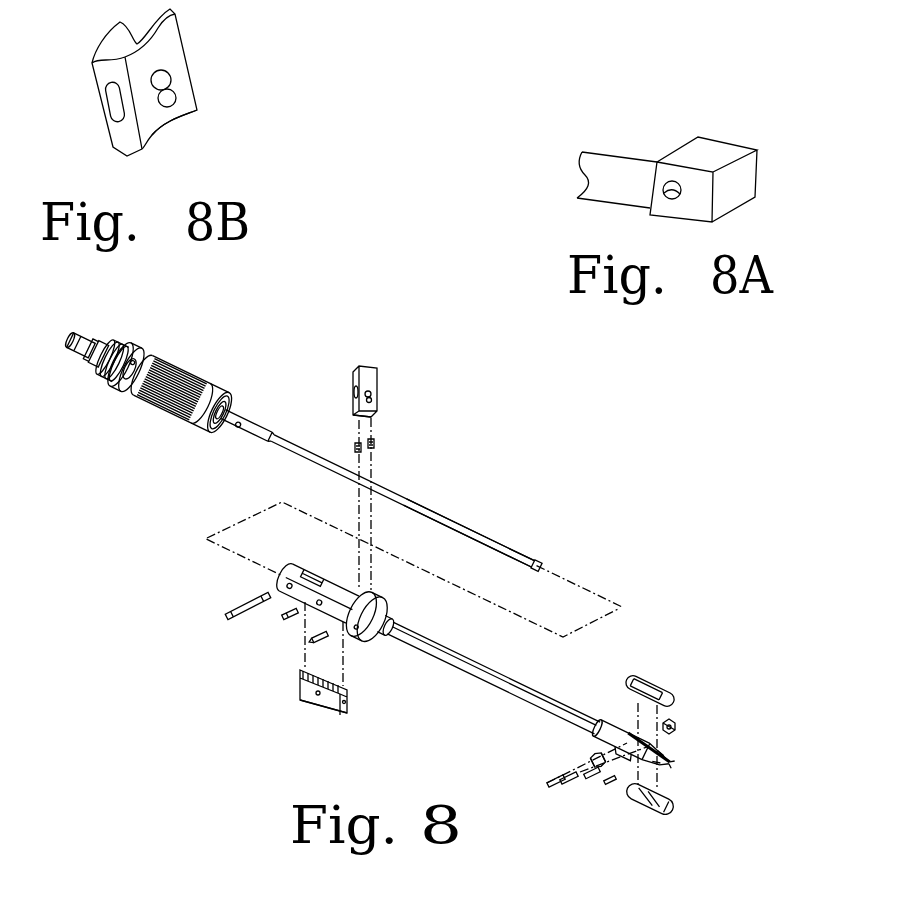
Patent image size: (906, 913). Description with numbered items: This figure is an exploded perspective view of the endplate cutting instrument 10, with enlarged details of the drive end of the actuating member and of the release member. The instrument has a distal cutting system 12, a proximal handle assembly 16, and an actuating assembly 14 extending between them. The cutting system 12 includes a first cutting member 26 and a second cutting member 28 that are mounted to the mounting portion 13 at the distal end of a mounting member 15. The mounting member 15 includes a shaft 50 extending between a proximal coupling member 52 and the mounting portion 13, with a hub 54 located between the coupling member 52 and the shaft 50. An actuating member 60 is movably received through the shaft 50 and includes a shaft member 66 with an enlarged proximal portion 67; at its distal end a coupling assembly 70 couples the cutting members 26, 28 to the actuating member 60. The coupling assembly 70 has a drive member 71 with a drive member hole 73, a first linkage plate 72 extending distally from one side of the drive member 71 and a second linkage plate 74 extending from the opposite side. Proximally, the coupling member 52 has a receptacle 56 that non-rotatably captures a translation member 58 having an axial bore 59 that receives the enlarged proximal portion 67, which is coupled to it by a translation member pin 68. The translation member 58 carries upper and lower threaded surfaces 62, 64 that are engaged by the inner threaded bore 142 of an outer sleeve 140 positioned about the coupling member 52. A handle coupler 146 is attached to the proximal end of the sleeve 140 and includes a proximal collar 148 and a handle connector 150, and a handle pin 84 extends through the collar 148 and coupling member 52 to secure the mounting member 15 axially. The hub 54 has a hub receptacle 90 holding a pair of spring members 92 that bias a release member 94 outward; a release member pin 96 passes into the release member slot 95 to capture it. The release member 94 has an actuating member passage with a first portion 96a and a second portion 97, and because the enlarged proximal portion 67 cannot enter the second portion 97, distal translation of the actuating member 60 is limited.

In FIG. 8, the endplate cutting instrument 10 is at (385, 318).
In FIG. 8, the distal cutting system 12 is at (700, 716).
In FIG. 8, the mounting portion 13 is at (675, 757).
In FIG. 8, the actuating assembly 14 is at (548, 524).
In FIG. 8, the mounting member 15 is at (531, 692).
In FIG. 8, the proximal handle assembly 16 is at (188, 358).
In FIG. 8, the first cutting member 26 is at (658, 680).
In FIG. 8, the second cutting member 28 is at (651, 812).
In FIG. 8, the shaft 50 is at (497, 678).
In FIG. 8, the coupling member 52 is at (283, 583).
In FIG. 8, the hub 54 is at (385, 640).
In FIG. 8, the receptacle 56 is at (322, 578).
In FIG. 8, the translation member 58 is at (306, 700).
In FIG. 8, the axial bore 59 is at (350, 700).
In FIG. 8, the actuating member 60 is at (467, 527).
In FIG. 8, the upper threaded surface 62 is at (298, 672).
In FIG. 8, the lower threaded surface 64 is at (325, 713).
In FIG. 8A, the shaft member 66 is at (620, 160).
In FIG. 8, the shaft member 66 is at (497, 540).
In FIG. 8, the enlarged proximal portion 67 is at (255, 426).
In FIG. 8, the translation member pin 68 is at (283, 619).
In FIG. 8, the coupling assembly 70 is at (578, 793).
In FIG. 8A, the drive member 71 is at (720, 148).
In FIG. 8, the drive member 71 is at (542, 566).
In FIG. 8, the first linkage plate 72 is at (592, 762).
In FIG. 8A, the drive member hole 73 is at (682, 200).
In FIG. 8, the second linkage plate 74 is at (680, 728).
In FIG. 8, the handle pin 84 is at (225, 618).
In FIG. 8, the hub receptacle 90 is at (392, 604).
In FIG. 8, the spring members 92 is at (376, 448).
In FIG. 8B, the release member 94 is at (98, 70).
In FIG. 8, the release member 94 is at (378, 375).
In FIG. 8B, the release member slot 95 is at (104, 100).
In FIG. 8, the release member slot 95 is at (353, 395).
In FIG. 8, the release member pin 96 is at (342, 638).
In FIG. 8B, the first portion of actuating member passage 96a is at (172, 78).
In FIG. 8, the first portion of actuating member passage 96a is at (380, 398).
In FIG. 8B, the second portion of actuating member passage 97 is at (190, 102).
In FIG. 8, the second portion of actuating member passage 97 is at (380, 411).
In FIG. 8, the outer sleeve 140 is at (208, 378).
In FIG. 8, the inner threaded bore 142 is at (212, 434).
In FIG. 8, the handle coupler 146 is at (108, 394).
In FIG. 8, the proximal collar 148 is at (130, 342).
In FIG. 8, the handle connector 150 is at (90, 336).